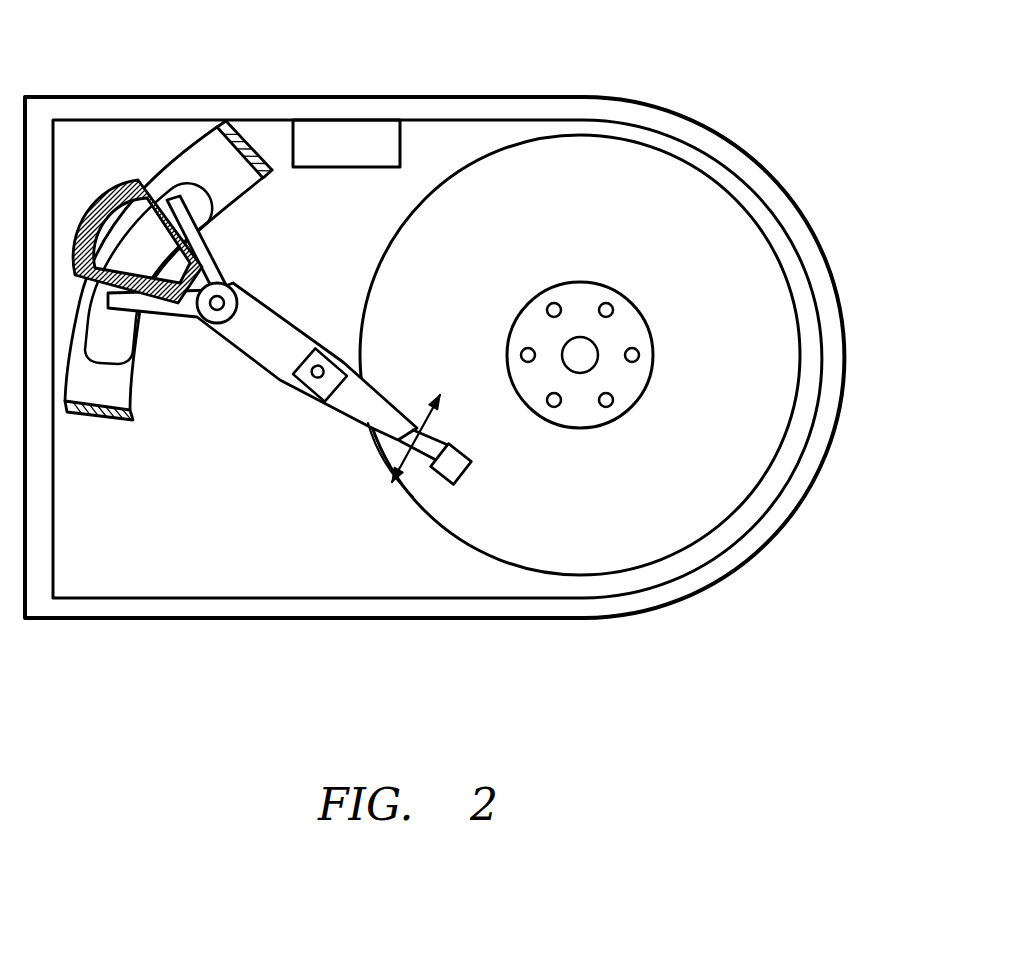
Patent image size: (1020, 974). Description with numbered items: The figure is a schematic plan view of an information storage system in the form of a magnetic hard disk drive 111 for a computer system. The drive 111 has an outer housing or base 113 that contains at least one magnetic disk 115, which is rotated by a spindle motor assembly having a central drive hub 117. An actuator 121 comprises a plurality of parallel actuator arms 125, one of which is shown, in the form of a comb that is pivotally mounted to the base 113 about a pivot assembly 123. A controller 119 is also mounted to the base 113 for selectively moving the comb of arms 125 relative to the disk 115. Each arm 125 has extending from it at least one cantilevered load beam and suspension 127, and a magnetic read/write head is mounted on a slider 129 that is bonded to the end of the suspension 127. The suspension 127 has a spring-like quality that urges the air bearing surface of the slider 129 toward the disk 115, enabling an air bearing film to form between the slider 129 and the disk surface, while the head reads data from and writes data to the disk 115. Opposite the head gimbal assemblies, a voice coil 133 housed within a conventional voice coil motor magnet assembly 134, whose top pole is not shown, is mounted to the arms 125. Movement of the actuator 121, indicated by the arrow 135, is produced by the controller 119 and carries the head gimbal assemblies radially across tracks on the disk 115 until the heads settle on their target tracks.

The magnetic hard disk drive 111 is at (790, 65).
The outer housing or base 113 is at (418, 97).
The magnetic disk 115 is at (740, 258).
The central drive hub 117 is at (586, 282).
The controller 119 is at (320, 130).
The actuator 121 is at (267, 354).
The pivot assembly 123 is at (233, 285).
The actuator arm 125 is at (273, 307).
The load beam and suspension 127 is at (380, 397).
The slider 129 is at (468, 475).
The voice coil 133 is at (92, 205).
The voice coil motor magnet assembly 134 is at (237, 173).
The arrow indicating actuator movement 135 is at (400, 438).